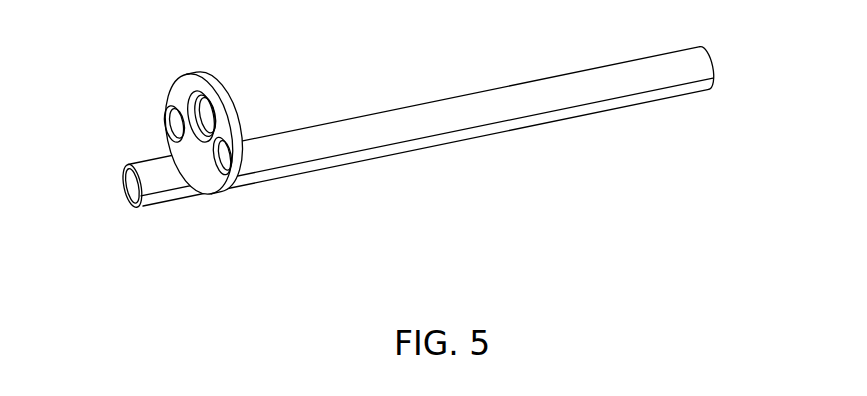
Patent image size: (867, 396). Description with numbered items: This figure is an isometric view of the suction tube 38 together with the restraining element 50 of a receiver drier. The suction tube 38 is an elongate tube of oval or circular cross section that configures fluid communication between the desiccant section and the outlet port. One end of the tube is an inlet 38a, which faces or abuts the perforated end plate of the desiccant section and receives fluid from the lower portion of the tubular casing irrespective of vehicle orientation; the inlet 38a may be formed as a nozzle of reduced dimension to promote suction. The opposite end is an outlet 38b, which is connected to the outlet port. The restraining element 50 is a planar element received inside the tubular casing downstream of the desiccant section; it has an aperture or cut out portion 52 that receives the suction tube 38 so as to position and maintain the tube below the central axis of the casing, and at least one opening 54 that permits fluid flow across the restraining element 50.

The suction tube 38 is at (415, 181).
The inlet 38a is at (130, 192).
The outlet 38b is at (713, 70).
The restraining element 50 is at (215, 190).
The aperture or cut out portion 52 is at (200, 153).
The opening 54 is at (203, 112).